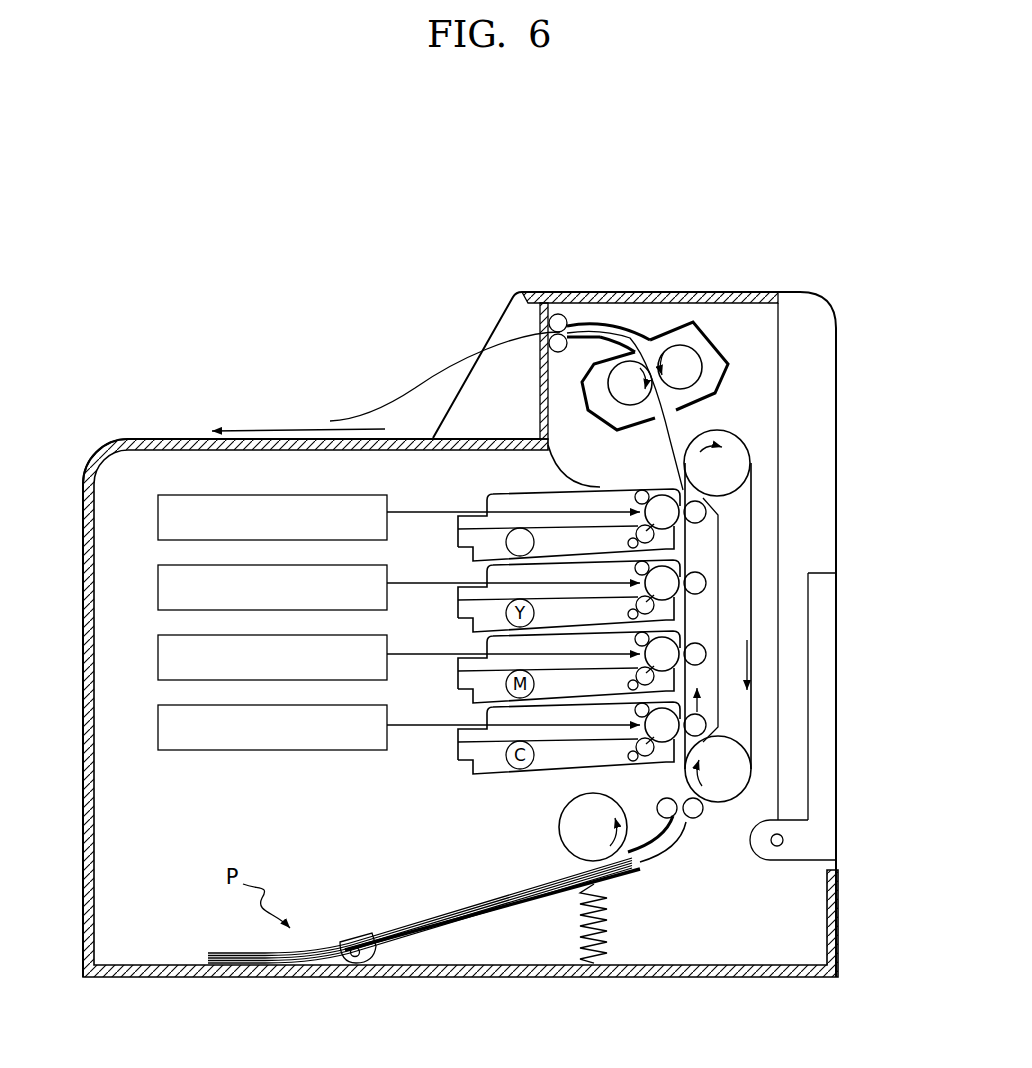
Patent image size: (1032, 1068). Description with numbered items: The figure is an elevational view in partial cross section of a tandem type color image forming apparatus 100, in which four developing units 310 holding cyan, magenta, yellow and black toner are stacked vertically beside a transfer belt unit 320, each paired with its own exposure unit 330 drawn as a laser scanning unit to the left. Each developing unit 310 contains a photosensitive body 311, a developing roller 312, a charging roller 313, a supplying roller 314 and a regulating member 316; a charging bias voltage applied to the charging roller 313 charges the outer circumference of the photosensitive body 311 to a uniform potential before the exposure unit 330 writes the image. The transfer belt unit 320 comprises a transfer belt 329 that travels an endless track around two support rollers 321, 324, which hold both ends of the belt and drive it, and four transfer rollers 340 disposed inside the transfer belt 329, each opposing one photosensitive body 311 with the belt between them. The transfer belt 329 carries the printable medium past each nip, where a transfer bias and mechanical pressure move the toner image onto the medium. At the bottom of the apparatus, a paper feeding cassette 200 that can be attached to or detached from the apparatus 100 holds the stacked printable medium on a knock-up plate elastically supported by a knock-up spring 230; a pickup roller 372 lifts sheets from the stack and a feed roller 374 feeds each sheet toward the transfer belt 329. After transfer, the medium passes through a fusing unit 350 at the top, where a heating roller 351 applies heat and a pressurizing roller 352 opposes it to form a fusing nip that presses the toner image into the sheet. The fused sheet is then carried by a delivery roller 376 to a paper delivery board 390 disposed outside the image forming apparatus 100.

The image forming apparatus 100 is at (104, 461).
The paper feeding cassette 200 is at (520, 962).
The knock-up spring 230 is at (606, 958).
The developing unit 310 is at (586, 476).
The photosensitive body 311 is at (659, 505).
The developing roller 312 is at (637, 531).
The charging roller 313 is at (637, 494).
The supplying roller 314 is at (629, 546).
The regulating member 316 is at (647, 523).
The transfer belt unit 320 is at (755, 527).
The support roller 321 is at (708, 773).
The support roller 324 is at (708, 462).
The transfer belt 329 is at (757, 597).
The exposure unit 330 is at (220, 488).
The transfer roller 340 is at (728, 587).
The fusing unit 350 is at (680, 362).
The heating roller 351 is at (710, 330).
The pressurizing roller 352 is at (628, 378).
The pickup roller 372 is at (592, 827).
The feed roller 374 is at (694, 814).
The delivery roller 376 is at (557, 314).
The paper delivery board 390 is at (313, 424).